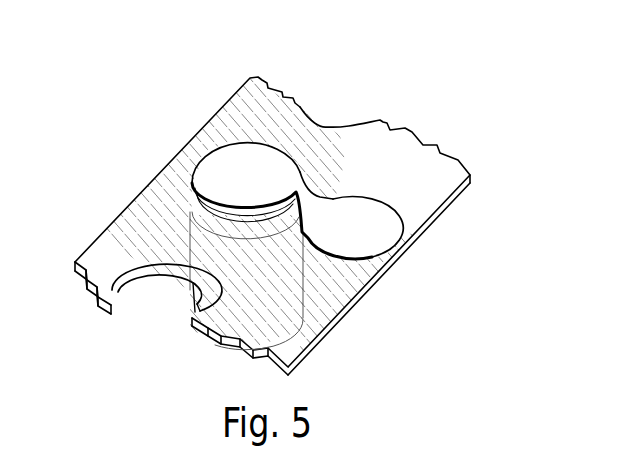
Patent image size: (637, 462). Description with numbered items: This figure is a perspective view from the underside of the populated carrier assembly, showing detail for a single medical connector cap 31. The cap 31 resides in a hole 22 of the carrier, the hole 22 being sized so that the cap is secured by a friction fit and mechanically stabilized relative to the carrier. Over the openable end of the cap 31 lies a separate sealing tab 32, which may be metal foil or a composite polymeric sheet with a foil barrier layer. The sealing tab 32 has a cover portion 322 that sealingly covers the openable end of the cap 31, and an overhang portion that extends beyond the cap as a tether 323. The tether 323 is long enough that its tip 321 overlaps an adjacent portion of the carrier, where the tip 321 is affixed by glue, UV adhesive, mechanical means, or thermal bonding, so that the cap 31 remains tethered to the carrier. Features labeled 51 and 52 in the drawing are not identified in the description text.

The hole 22 is at (138, 272).
The medical connector cap 31 is at (202, 297).
The sealing tab 32 is at (322, 156).
The tip 321 is at (384, 241).
The cover portion 322 is at (213, 163).
The tether 323 is at (303, 207).
The bottom edge 51 is at (276, 354).
The lip 52 is at (184, 192).